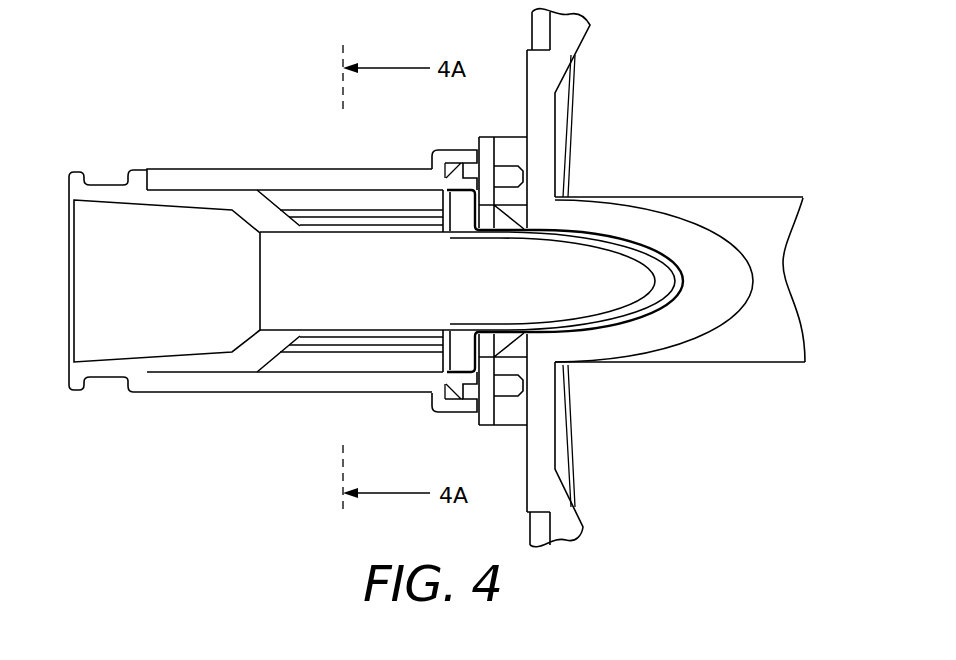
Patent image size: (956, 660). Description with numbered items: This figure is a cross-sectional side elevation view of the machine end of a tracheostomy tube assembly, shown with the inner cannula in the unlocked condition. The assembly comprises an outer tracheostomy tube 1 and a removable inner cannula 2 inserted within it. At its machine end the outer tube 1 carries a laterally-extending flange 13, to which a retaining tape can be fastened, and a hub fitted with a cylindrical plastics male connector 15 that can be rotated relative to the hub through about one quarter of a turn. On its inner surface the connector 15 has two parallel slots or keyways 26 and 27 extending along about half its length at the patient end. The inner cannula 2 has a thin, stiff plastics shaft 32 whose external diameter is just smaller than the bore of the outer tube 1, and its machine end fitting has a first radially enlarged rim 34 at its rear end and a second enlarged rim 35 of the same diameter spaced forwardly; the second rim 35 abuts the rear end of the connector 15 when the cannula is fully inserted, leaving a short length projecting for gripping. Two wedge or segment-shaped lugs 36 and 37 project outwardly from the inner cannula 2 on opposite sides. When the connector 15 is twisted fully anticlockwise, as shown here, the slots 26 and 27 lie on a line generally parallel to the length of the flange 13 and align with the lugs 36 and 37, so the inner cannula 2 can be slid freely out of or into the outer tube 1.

The outer tracheostomy tube 1 is at (733, 197).
The inner cannula 2 is at (613, 240).
The flange 13 is at (560, 54).
The male connector 15 is at (199, 169).
The slot 26 is at (337, 371).
The slot 27 is at (333, 191).
The shaft 32 is at (547, 235).
The first radially enlarged rim 34 is at (76, 171).
The second enlarged rim 35 is at (138, 393).
The lug 36 is at (452, 358).
The lug 37 is at (457, 207).